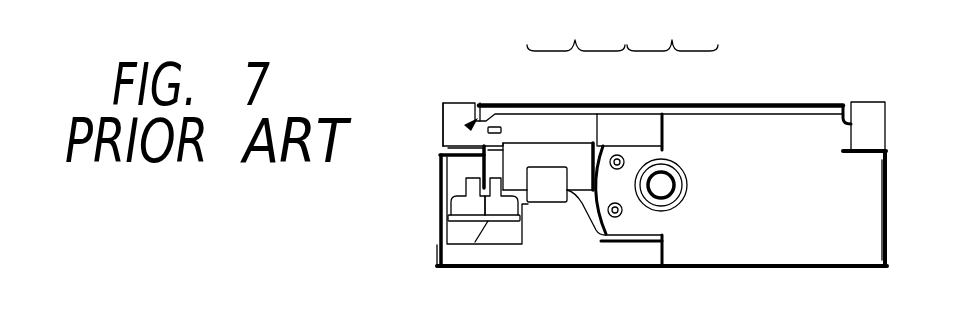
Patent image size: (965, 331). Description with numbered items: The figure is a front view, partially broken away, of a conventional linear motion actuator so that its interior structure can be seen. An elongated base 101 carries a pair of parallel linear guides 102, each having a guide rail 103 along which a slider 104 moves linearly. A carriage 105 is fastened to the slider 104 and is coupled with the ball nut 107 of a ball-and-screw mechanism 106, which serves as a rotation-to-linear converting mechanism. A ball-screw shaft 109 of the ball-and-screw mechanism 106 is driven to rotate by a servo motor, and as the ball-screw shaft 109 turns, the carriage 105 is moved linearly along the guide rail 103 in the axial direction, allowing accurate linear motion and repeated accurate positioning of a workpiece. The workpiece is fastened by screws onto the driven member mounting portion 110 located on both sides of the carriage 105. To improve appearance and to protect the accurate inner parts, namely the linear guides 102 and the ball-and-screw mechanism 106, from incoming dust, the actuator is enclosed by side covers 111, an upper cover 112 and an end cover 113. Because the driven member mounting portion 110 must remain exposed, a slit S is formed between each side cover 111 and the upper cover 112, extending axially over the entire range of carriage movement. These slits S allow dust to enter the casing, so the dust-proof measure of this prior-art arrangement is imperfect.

The slit S is at (466, 126).
The base 101 is at (547, 252).
The linear guides 102 is at (576, 28).
The guide rail 103 is at (535, 167).
The slider 104 is at (578, 150).
The carriage 105 is at (447, 118).
The ball-and-screw mechanism 106 is at (657, 119).
The ball nut 107 is at (618, 155).
The ball-screw shaft 109 is at (679, 160).
The driven member mounting portion 110 is at (460, 102).
The side covers 111 is at (439, 179).
The upper cover 112 is at (497, 106).
The end cover 113 is at (760, 253).